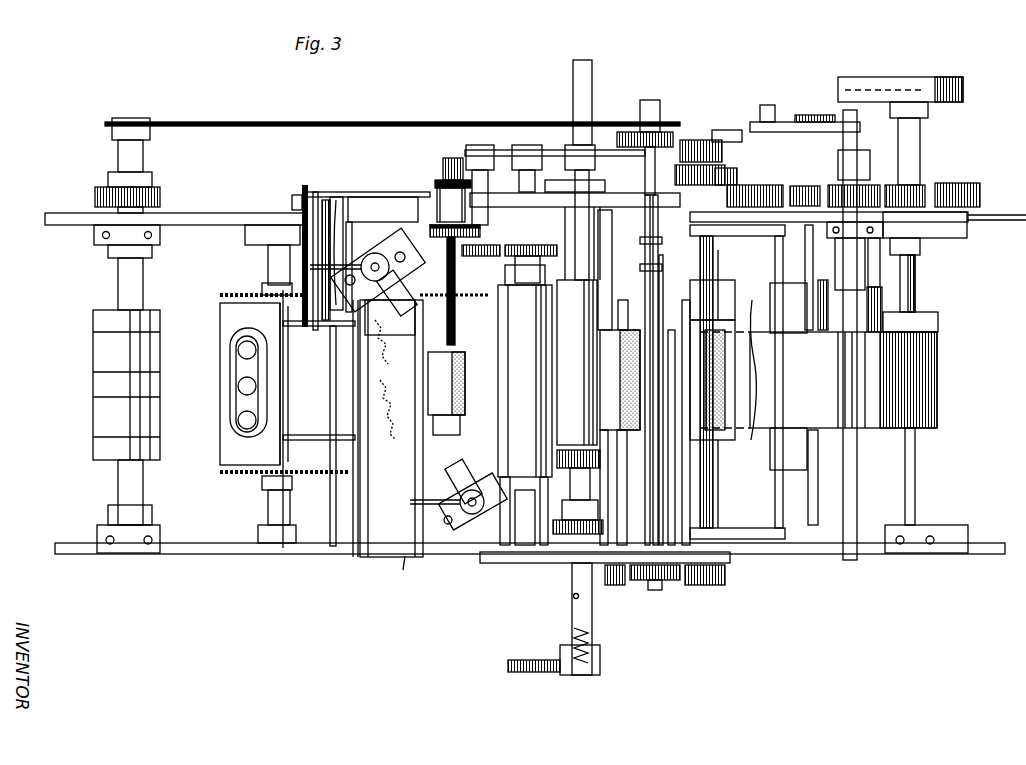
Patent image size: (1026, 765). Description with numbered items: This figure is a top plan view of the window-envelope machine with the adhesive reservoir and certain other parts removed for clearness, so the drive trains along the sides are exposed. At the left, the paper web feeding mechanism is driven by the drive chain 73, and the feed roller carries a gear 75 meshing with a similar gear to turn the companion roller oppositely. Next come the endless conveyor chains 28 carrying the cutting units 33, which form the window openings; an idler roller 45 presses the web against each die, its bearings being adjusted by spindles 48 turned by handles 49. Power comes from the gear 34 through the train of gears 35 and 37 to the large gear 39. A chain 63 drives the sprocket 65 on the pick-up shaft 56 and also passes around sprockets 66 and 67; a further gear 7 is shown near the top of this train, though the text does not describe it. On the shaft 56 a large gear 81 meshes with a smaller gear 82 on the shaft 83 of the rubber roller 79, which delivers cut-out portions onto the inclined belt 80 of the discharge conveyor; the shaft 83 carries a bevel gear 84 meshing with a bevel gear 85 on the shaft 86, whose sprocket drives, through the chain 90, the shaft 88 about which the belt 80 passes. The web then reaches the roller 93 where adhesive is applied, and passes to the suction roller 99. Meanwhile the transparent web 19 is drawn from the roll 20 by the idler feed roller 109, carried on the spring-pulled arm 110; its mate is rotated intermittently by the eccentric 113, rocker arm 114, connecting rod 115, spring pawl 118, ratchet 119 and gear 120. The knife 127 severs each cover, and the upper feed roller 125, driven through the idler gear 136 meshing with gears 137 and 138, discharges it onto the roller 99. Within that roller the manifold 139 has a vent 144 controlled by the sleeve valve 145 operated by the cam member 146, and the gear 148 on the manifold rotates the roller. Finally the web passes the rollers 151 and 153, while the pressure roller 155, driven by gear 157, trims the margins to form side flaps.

The gear 7 is at (656, 104).
The web of transparent paper 19 is at (754, 332).
The roll 20 is at (938, 380).
The endless conveyor chains 28 is at (265, 290).
The cutting units 33 is at (230, 410).
The gear 34 is at (968, 184).
The gear 35 is at (928, 186).
The gear 37 is at (805, 186).
The large gear 39 is at (768, 180).
The idler roller 45 is at (395, 308).
The spindles 48 is at (470, 514).
The handles 49 is at (372, 258).
The shaft 56 is at (475, 145).
The chain 63 is at (555, 150).
The sprocket 65 is at (522, 145).
The sprocket 66 is at (558, 148).
The sprocket 67 is at (592, 145).
The drive chain 73 is at (352, 122).
The gear 75 is at (95, 197).
The roller 79 is at (446, 393).
The inclined belt 80 is at (388, 428).
The large gear 81 is at (462, 252).
The gear 82 is at (430, 232).
The shaft 83 is at (447, 282).
The bevel gear 84 is at (443, 172).
The bevel gear 85 is at (435, 198).
The shaft 86 is at (292, 203).
The shaft 88 is at (300, 325).
The chain 90 is at (307, 190).
The roller 93 is at (525, 405).
The roller 99 is at (598, 355).
The feed roller 109 is at (735, 435).
The arm 110 is at (752, 238).
The eccentric 113 is at (936, 78).
The rocker arm 114 is at (790, 122).
The connecting rod 115 is at (812, 115).
The spring pawl 118 is at (728, 130).
The ratchet 119 is at (695, 140).
The gear 120 is at (745, 166).
The feed roller 125 is at (637, 430).
The cutter or knife 127 is at (655, 290).
The idler gear 136 is at (655, 586).
The gear 137 is at (725, 578).
The gear 138 is at (612, 586).
The manifold 139 is at (570, 593).
The vent 144 is at (573, 598).
The sleeve valve 145 is at (590, 675).
The cam member 146 is at (535, 672).
The gear 148 is at (603, 526).
The roller 151 is at (785, 298).
The roller 153 is at (938, 320).
The pressure roller 155 is at (882, 290).
The gear 157 is at (870, 185).